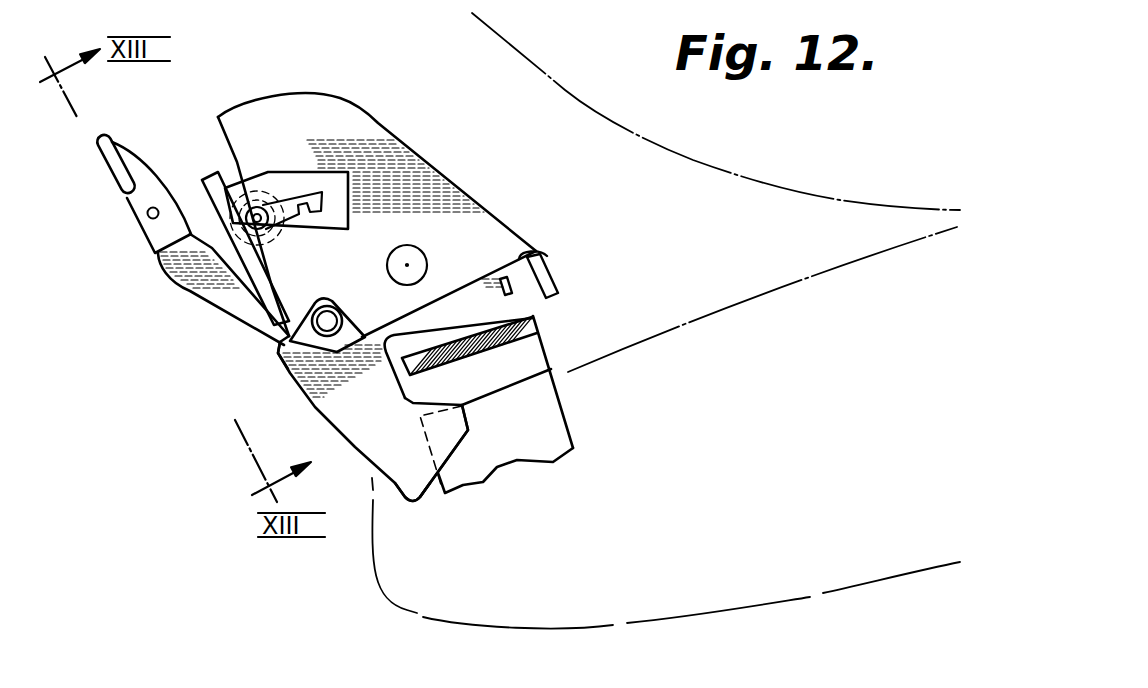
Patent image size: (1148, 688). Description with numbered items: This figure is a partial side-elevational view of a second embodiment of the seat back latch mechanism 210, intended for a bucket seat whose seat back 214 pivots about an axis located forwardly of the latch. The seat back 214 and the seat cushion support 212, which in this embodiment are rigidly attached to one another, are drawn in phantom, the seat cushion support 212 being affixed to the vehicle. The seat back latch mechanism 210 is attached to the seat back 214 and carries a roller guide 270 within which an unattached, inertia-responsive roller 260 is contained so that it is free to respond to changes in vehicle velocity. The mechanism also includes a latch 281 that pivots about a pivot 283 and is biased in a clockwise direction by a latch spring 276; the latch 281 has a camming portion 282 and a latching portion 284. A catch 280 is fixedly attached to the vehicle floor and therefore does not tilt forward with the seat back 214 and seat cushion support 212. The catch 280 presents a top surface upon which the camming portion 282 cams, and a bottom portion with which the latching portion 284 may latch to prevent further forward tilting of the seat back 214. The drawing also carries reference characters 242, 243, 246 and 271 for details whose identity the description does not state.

The seat back latch mechanism 210 is at (224, 333).
The seat cushion support 212 is at (780, 620).
The seat back 214 is at (556, 52).
The lever 242 is at (143, 202).
The pivot bushing 243 is at (323, 318).
The notch 246 is at (288, 366).
The inertia-responsive roller 260 is at (232, 162).
The roller guide 270 is at (292, 194).
The slot plate 271 is at (316, 207).
The latch spring 276 is at (547, 255).
The catch 280 is at (500, 345).
The latch 281 is at (407, 483).
The camming portion 282 is at (511, 295).
The pivot 283 is at (413, 255).
The latching portion 284 is at (452, 428).